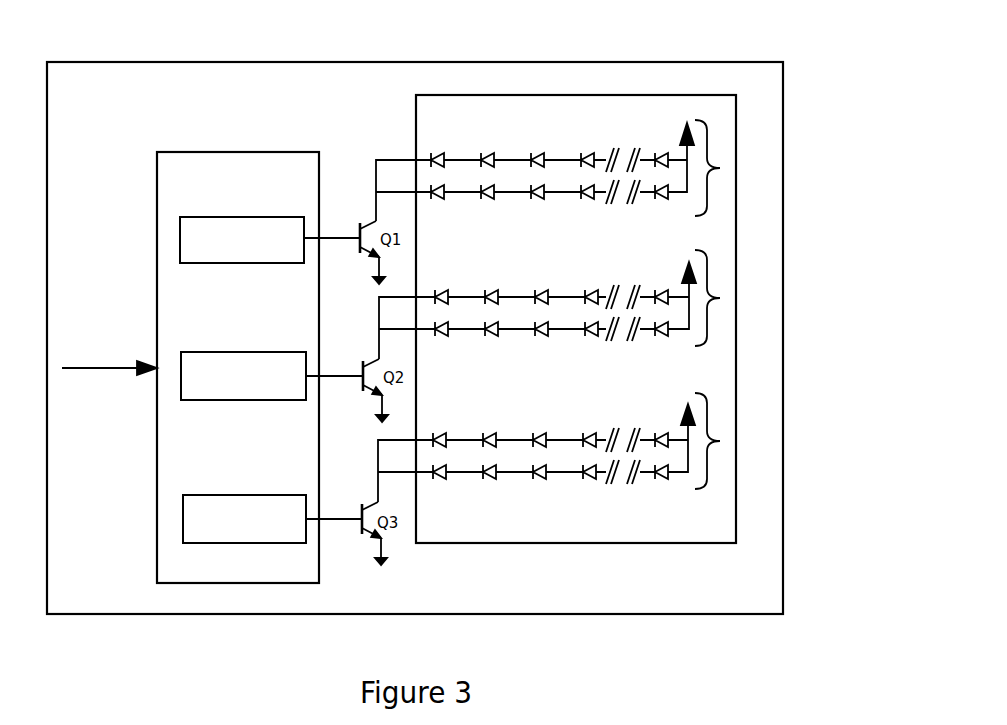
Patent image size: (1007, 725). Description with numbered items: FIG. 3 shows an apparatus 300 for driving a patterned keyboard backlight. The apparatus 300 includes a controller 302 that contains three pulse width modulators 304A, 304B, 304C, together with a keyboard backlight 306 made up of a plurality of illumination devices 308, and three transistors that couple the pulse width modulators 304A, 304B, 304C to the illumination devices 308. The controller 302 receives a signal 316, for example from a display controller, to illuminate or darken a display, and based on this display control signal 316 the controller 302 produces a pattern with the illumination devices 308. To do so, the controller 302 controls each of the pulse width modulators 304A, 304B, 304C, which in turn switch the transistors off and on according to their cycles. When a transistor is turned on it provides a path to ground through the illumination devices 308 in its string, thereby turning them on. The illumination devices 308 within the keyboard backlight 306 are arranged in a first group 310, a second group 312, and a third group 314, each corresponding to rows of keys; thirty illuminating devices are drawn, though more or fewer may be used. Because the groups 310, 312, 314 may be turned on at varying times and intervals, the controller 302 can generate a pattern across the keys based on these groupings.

The apparatus 300 is at (415, 338).
The controller 302 is at (238, 367).
The pulse width modulator 304A is at (242, 240).
The pulse width modulator 304B is at (243, 376).
The pulse width modulator 304C is at (244, 519).
The keyboard backlight 306 is at (576, 319).
The illumination devices 308 is at (424, 125).
The first group 310 is at (608, 162).
The second group 312 is at (720, 298).
The third group 314 is at (720, 441).
The signal 316 is at (132, 364).